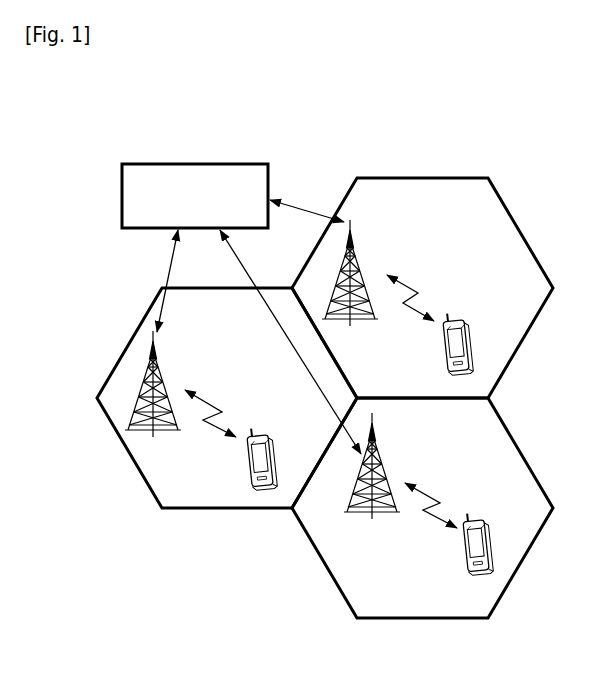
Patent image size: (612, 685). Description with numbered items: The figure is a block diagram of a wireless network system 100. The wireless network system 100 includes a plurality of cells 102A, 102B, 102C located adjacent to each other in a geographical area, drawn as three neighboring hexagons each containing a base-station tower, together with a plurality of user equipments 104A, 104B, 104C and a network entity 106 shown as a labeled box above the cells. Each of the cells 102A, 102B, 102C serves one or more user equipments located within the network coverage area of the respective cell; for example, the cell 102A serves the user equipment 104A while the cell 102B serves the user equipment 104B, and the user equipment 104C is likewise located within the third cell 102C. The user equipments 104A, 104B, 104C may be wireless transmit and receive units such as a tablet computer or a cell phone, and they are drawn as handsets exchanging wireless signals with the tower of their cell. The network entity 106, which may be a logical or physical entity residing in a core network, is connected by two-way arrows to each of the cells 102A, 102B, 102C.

The wireless network system 100 is at (490, 114).
The network entity 106 is at (197, 163).
The cell 102A is at (143, 390).
The cell 102B is at (343, 260).
The cell 102C is at (361, 506).
The user equipment 104A is at (253, 485).
The user equipment 104B is at (469, 345).
The user equipment 104C is at (471, 578).